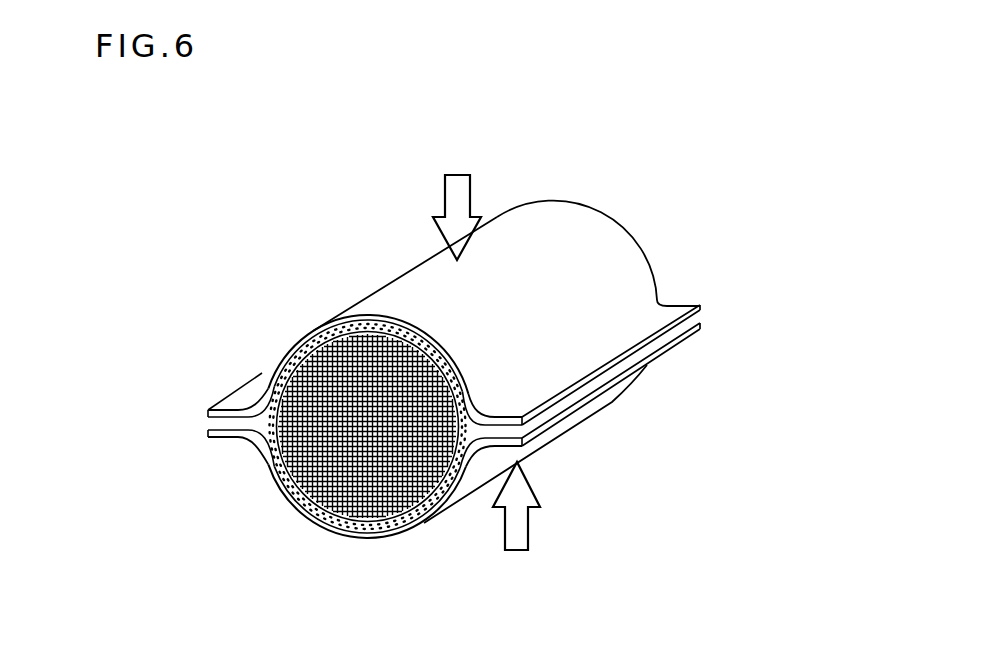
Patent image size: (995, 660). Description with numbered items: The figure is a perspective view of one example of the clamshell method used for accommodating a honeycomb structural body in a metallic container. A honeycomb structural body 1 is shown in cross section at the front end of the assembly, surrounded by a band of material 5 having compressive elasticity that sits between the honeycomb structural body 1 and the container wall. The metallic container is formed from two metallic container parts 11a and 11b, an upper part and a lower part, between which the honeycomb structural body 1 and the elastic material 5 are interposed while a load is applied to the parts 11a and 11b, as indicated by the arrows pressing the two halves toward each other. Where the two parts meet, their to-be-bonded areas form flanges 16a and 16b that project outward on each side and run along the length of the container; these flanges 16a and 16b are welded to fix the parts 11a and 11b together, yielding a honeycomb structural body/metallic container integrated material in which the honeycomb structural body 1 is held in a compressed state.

The honeycomb structural body 1 is at (373, 488).
The holding mat 5 is at (340, 523).
The metallic container part 11a is at (403, 297).
The metallic container part 11b is at (263, 478).
The flange 16a is at (215, 423).
The flange 16b is at (565, 417).